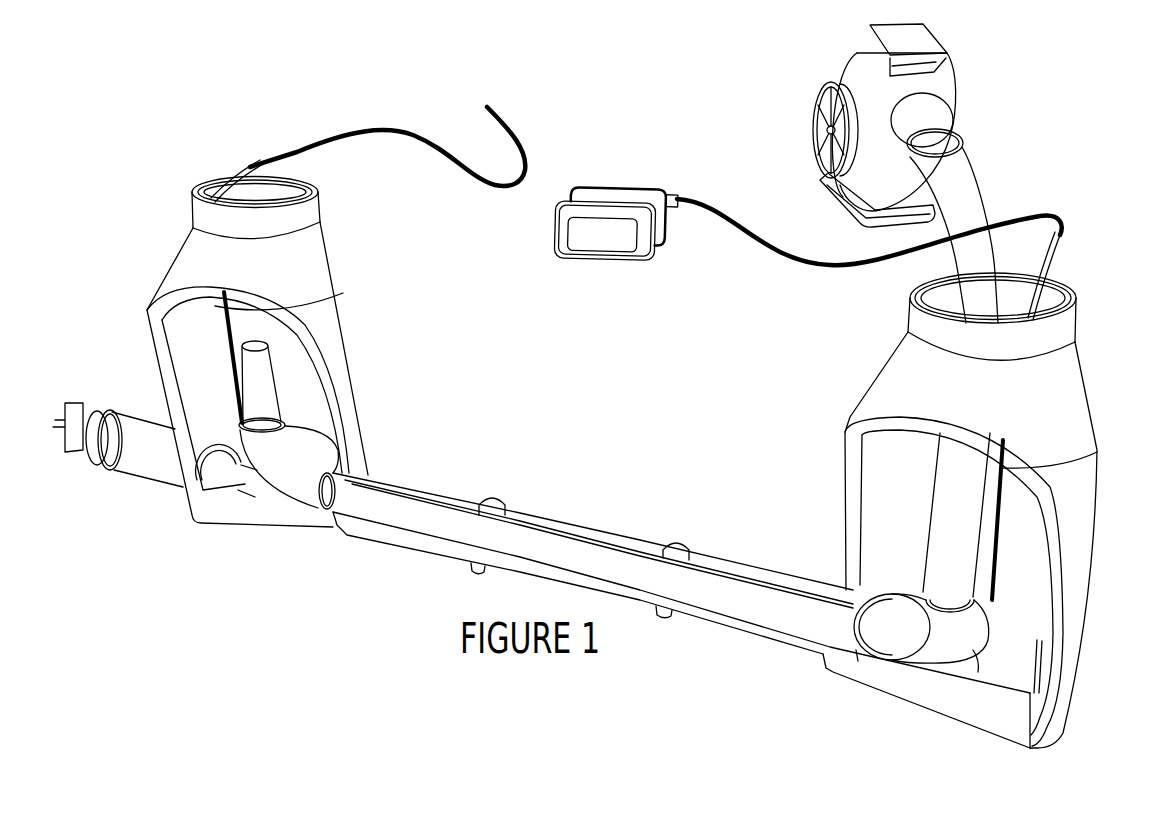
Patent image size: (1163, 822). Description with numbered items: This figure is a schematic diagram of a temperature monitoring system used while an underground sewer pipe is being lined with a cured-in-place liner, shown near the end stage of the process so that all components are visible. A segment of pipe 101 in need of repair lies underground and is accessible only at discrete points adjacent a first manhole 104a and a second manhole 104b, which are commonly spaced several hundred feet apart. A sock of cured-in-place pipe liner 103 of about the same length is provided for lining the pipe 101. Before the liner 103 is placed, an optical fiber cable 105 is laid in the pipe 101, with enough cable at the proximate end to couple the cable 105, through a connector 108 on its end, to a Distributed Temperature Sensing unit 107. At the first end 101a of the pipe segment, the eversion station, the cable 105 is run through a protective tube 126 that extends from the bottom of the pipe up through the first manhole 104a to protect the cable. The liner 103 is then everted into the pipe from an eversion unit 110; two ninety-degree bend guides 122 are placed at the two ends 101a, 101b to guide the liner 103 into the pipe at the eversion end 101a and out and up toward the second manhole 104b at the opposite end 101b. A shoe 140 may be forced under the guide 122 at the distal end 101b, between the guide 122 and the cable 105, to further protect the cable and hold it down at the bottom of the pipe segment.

The pipe segment 101 is at (548, 521).
The first end of the pipe segment 101a is at (825, 657).
The second end of the pipe segment 101b is at (337, 537).
The cured-in-place pipe liner 103 is at (267, 390).
The first manhole 104a is at (1070, 297).
The second manhole 104b is at (195, 190).
The optical fiber cable 105 is at (385, 130).
The Distributed Temperature Sensing (DTS) unit 107 is at (578, 188).
The connector 108 is at (672, 193).
The eversion unit 110 is at (988, 77).
The guide 122 is at (305, 447).
The protective tube 126 is at (973, 652).
The shoe 140 is at (247, 477).